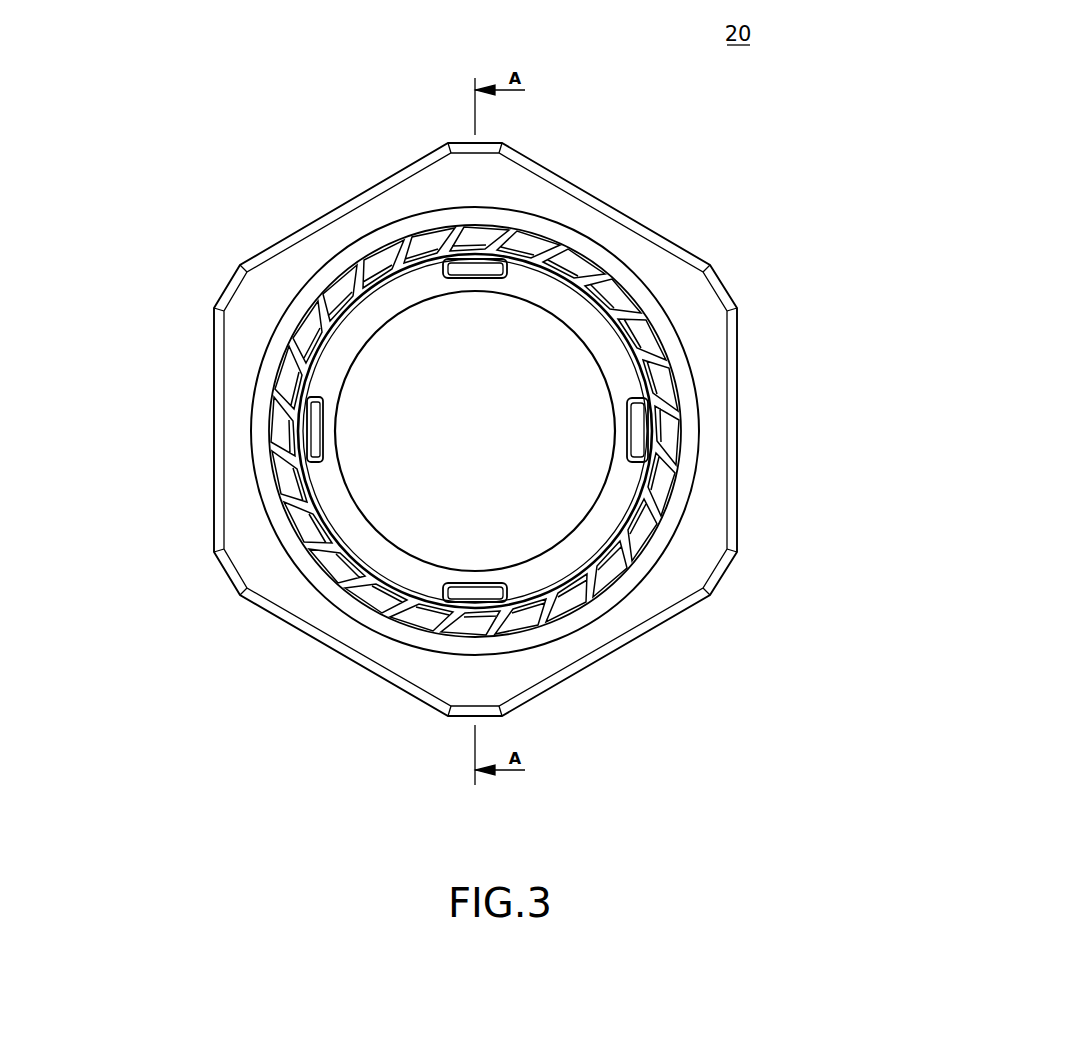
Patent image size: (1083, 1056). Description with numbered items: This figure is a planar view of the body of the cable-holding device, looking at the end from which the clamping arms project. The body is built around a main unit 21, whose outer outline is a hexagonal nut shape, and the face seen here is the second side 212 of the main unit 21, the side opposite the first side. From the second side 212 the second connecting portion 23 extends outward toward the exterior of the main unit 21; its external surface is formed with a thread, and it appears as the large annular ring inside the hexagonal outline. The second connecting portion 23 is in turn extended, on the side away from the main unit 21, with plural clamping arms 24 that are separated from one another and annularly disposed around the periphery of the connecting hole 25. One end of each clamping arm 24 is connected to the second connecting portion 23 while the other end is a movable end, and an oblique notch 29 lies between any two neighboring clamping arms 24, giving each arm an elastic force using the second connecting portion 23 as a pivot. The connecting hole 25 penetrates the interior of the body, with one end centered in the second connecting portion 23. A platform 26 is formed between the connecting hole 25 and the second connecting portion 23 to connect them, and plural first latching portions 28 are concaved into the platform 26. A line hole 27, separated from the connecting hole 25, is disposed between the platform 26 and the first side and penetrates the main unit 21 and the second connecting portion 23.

The main unit 21 is at (472, 429).
The second side 212 is at (242, 342).
The second connecting portion 23 is at (622, 592).
The clamping arms 24 is at (425, 471).
The connecting hole 25 is at (553, 363).
The platform 26 is at (441, 361).
The line hole 27 is at (460, 265).
The first latching portions 28 is at (312, 442).
The oblique notch 29 is at (340, 562).